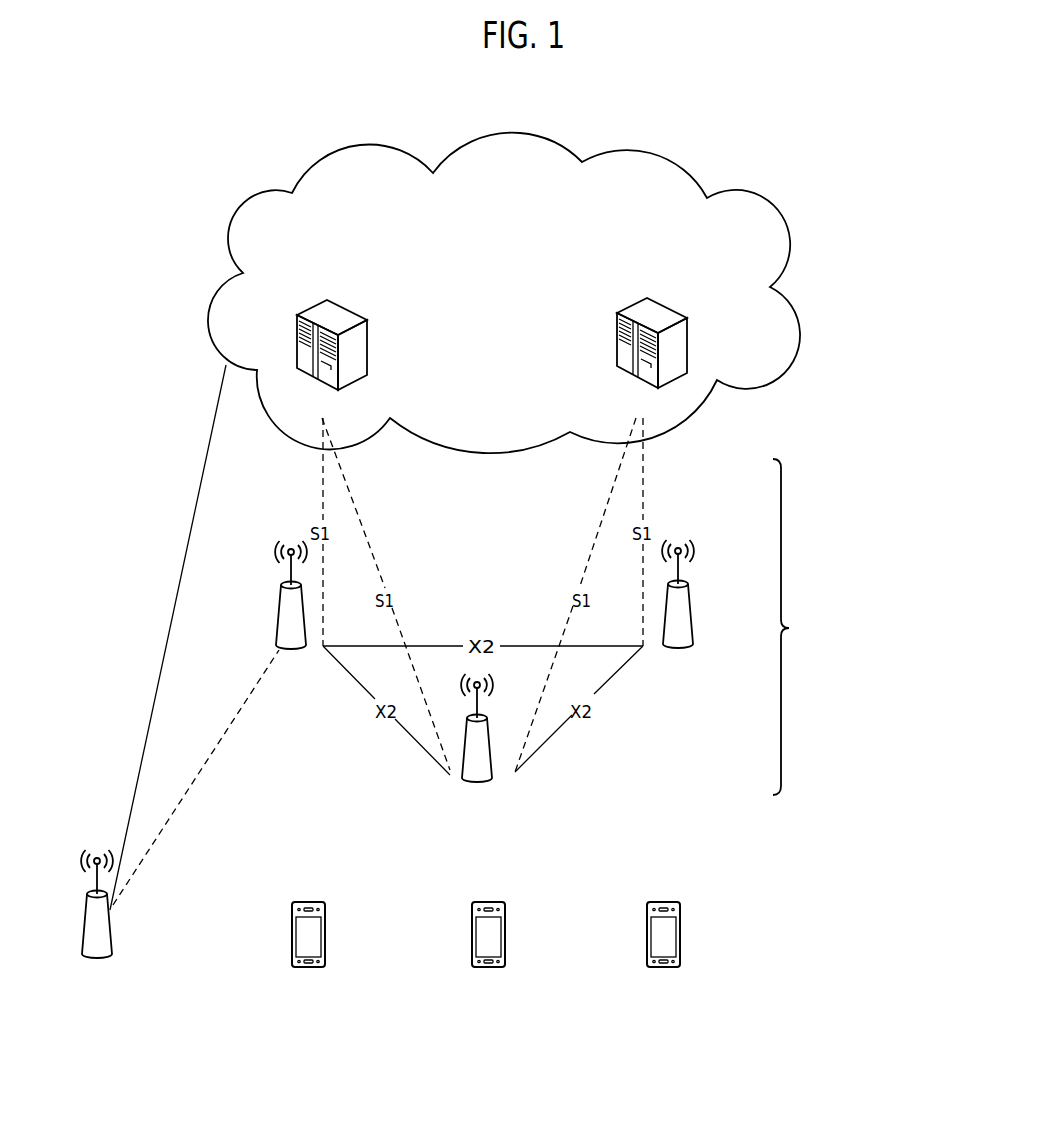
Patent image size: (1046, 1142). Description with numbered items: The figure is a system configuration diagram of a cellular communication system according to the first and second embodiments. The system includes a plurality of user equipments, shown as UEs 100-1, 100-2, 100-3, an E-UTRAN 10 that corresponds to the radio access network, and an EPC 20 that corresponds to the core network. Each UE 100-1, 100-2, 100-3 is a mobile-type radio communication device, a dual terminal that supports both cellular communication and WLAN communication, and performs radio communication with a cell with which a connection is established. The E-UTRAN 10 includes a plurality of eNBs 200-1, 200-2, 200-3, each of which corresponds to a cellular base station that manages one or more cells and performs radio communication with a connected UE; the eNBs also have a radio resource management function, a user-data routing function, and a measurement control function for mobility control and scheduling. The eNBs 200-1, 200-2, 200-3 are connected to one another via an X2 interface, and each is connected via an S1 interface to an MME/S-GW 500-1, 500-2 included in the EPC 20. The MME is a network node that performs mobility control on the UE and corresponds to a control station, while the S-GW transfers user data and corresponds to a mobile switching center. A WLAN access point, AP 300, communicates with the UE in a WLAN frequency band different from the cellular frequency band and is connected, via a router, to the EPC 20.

The EPC 20 is at (687, 167).
The MME/S-GW 500-1 is at (354, 306).
The MME/S-GW 500-2 is at (663, 310).
The E-UTRAN 10 is at (821, 627).
The eNB 200-1 is at (279, 618).
The eNB 200-2 is at (493, 758).
The eNB 200-3 is at (688, 597).
The WLAN access point 300 is at (114, 932).
The UE 100-1 is at (312, 901).
The UE 100-2 is at (492, 901).
The UE 100-3 is at (667, 901).